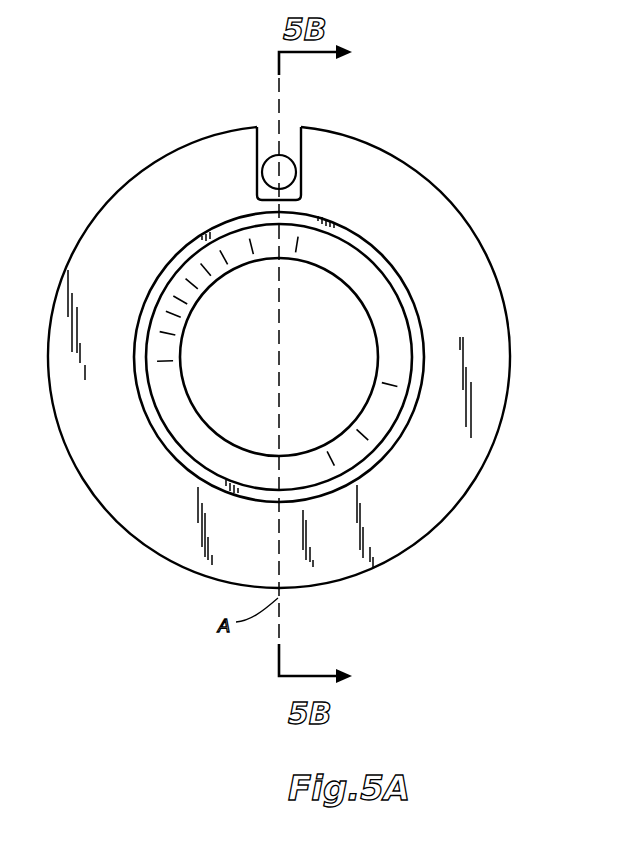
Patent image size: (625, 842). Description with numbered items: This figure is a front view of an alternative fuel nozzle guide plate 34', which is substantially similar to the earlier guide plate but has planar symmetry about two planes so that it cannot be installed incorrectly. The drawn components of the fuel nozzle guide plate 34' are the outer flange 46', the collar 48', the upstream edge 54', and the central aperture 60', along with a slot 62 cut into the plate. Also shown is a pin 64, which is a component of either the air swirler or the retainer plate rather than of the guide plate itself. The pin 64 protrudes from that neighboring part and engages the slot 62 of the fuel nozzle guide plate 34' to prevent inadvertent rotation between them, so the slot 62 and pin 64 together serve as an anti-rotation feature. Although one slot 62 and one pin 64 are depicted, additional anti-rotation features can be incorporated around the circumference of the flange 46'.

The fuel nozzle guide plate 34' is at (324, 369).
The flange 46' is at (279, 357).
The collar 48' is at (463, 494).
The upstream edge 54' is at (347, 357).
The aperture 60' is at (329, 307).
The slot 62 is at (293, 193).
The pin 64 is at (281, 156).